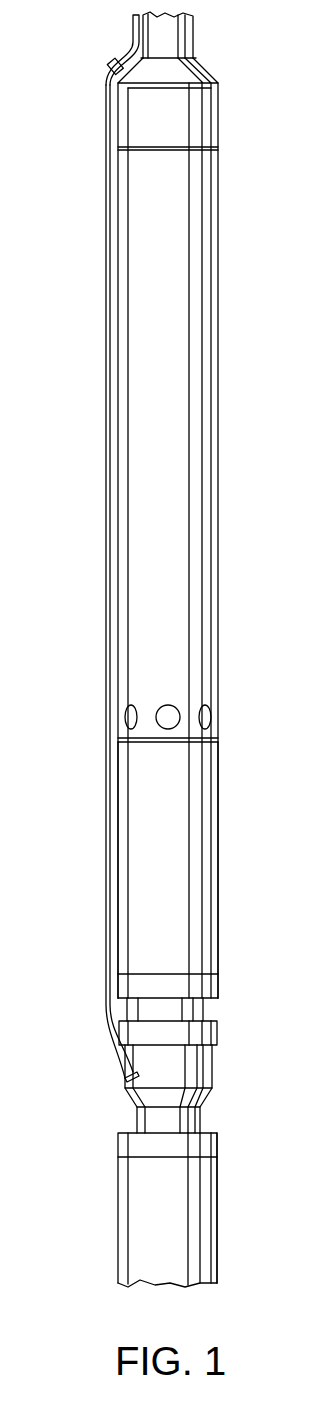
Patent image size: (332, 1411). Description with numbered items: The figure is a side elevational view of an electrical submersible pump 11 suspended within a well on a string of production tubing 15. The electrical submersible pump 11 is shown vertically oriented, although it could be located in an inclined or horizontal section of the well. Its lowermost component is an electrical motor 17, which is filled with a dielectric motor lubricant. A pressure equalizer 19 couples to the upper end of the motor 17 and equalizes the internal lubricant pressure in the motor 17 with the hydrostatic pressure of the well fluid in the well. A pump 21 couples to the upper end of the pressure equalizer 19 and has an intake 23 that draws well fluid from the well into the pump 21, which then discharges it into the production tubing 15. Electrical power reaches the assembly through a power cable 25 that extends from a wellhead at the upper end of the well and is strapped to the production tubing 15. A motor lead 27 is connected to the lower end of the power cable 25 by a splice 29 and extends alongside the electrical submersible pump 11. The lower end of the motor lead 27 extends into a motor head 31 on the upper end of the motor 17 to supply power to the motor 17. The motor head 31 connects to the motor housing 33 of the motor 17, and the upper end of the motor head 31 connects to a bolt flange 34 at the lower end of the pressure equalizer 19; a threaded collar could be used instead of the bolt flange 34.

The electrical submersible pump 11 is at (218, 897).
The production tubing 15 is at (172, 45).
The electrical motor 17 is at (142, 1230).
The pressure equalizer 19 is at (140, 900).
The pump 21 is at (180, 302).
The intake 23 is at (168, 717).
The power cable 25 is at (132, 42).
The motor lead 27 is at (106, 283).
The splice 29 is at (112, 65).
The motor head 31 is at (157, 1119).
The motor housing 33 is at (218, 1200).
The bolt flange 34 is at (198, 1034).